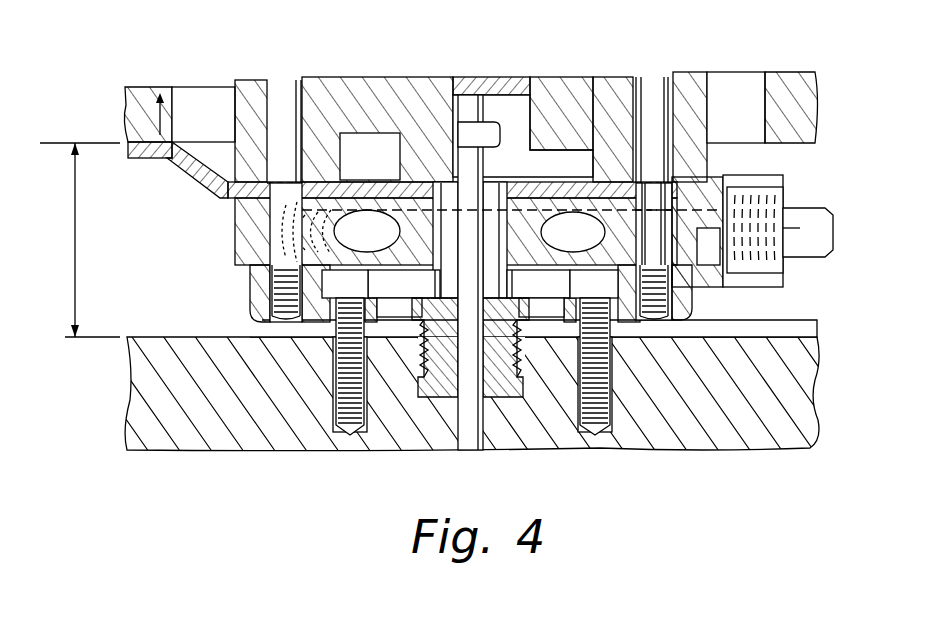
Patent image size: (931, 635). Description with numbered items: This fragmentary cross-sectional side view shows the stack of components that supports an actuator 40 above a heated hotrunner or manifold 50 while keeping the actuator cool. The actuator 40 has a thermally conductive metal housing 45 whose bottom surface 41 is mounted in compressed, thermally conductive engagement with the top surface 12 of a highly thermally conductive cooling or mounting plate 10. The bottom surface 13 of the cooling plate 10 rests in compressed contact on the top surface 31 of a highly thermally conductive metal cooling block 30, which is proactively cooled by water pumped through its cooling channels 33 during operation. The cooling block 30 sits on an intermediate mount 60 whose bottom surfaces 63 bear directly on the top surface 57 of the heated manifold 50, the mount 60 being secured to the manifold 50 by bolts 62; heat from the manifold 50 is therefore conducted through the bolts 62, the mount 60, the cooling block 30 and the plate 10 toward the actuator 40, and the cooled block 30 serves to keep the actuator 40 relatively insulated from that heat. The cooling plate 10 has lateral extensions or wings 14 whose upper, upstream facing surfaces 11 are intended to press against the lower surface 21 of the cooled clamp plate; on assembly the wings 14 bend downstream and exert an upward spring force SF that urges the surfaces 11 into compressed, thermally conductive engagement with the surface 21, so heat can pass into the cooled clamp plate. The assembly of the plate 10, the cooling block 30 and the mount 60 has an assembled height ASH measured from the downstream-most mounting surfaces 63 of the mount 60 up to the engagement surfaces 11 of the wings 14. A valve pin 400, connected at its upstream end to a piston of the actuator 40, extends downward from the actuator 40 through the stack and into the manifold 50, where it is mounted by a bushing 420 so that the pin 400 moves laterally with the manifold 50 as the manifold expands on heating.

The cooling plate 10 is at (195, 188).
The upper surface 11 is at (148, 88).
The top surface 12 is at (247, 100).
The bottom surface 13 is at (235, 222).
The wings 14 is at (201, 152).
The lower surface 21 is at (157, 145).
The cooling block 30 is at (353, 188).
The top surface 31 is at (303, 100).
The cooling channels 33 is at (381, 185).
The actuator 40 is at (696, 66).
The bottom surface 41 is at (236, 202).
The housing 45 is at (709, 96).
The manifold 50 is at (124, 395).
The top surface 57 is at (200, 337).
The mount 60 is at (700, 308).
The bolts 62 is at (333, 405).
The bottom surfaces 63 is at (332, 340).
The valve pin 400 is at (485, 438).
The bushing 420 is at (437, 402).
The spring force SF is at (168, 145).
The assembled height ASH is at (80, 240).